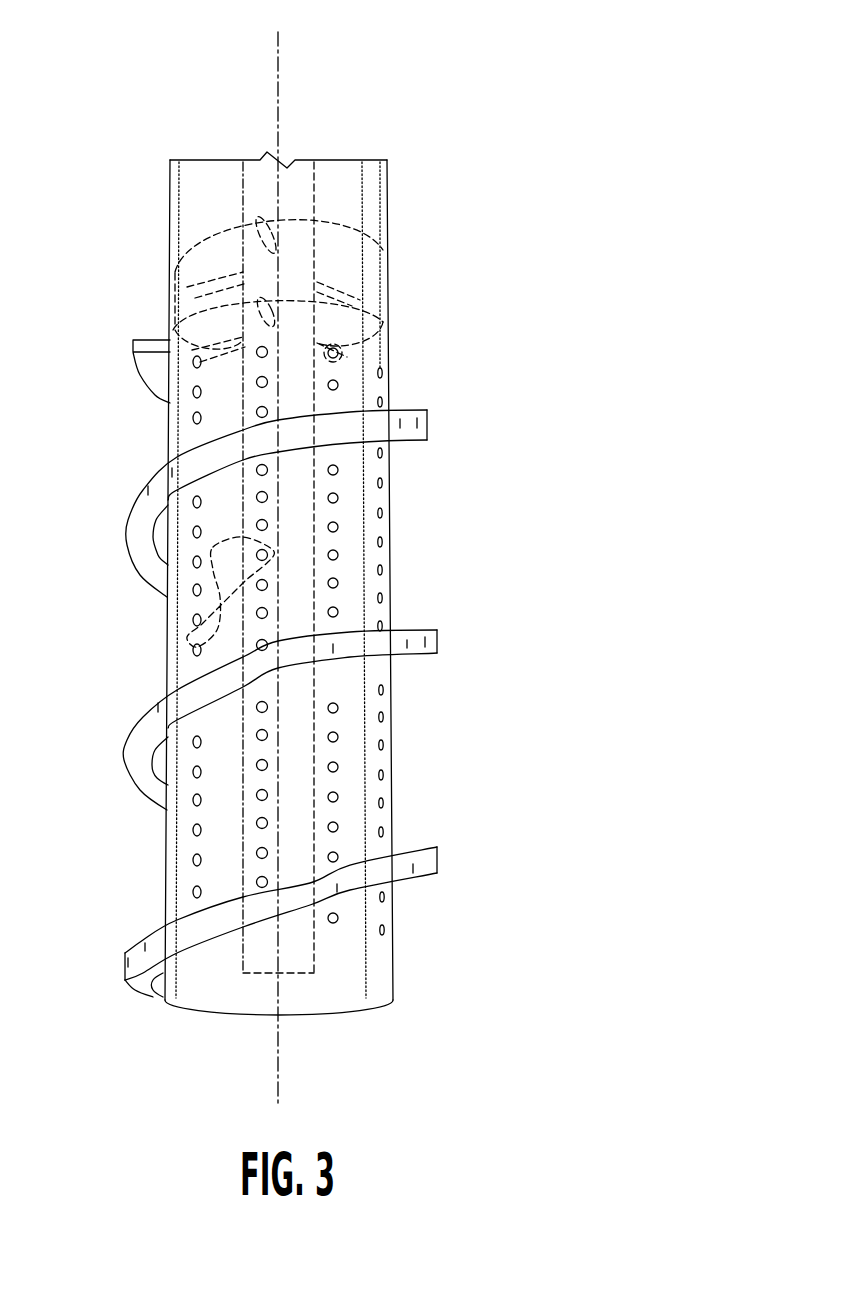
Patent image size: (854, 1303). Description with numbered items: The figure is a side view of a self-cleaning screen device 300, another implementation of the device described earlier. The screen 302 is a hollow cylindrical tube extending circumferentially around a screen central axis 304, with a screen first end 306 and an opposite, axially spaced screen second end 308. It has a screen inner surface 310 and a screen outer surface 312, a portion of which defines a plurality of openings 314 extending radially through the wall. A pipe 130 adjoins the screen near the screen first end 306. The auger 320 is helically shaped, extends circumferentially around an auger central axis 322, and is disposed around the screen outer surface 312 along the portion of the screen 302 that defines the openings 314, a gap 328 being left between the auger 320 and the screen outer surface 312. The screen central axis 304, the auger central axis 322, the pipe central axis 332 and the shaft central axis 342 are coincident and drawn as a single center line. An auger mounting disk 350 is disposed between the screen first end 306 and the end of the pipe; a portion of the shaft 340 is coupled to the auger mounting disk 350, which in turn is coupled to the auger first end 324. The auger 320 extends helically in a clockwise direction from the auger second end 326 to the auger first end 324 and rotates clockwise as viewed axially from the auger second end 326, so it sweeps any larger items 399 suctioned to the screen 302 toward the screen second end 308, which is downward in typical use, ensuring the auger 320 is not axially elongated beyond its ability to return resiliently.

The drum 130 is at (358, 200).
The self-cleaning screen device 300 is at (613, 343).
The screen 302 is at (187, 417).
The central axis 304 is at (398, 555).
The axis of first flight 322 is at (398, 555).
The axis of second flight 332 is at (398, 555).
The axis of third flight 342 is at (282, 54).
The screen first end 306 is at (348, 387).
The screen second end 308 is at (363, 1012).
The drum outlet 310 is at (217, 1015).
The apertures 312 is at (362, 742).
The apertures 314 is at (340, 557).
The auger 320 is at (143, 503).
The auger first end 324 is at (403, 418).
The auger second end 326 is at (127, 990).
The flight inner edge 328 is at (162, 527).
The shaft 340 is at (317, 613).
The auger mounting disk 350 is at (343, 303).
The larger items 399 is at (183, 637).